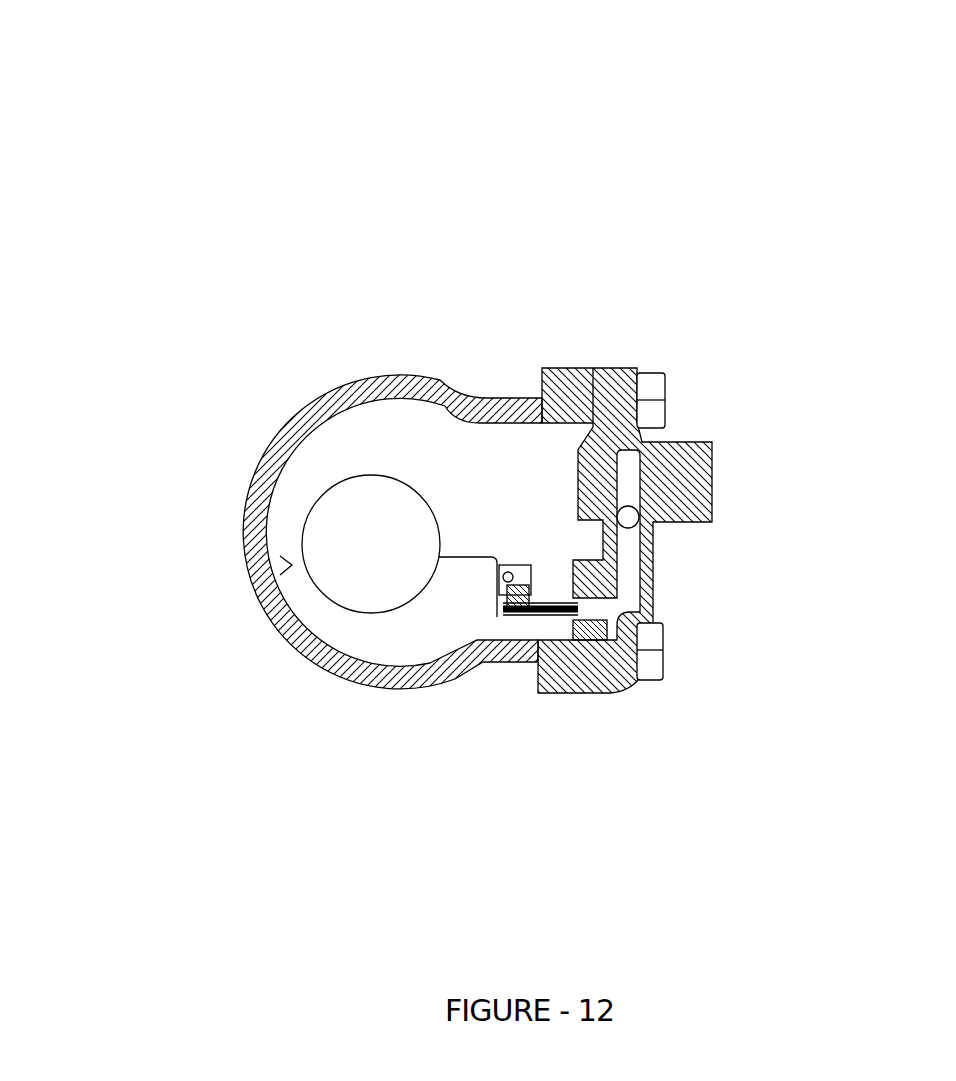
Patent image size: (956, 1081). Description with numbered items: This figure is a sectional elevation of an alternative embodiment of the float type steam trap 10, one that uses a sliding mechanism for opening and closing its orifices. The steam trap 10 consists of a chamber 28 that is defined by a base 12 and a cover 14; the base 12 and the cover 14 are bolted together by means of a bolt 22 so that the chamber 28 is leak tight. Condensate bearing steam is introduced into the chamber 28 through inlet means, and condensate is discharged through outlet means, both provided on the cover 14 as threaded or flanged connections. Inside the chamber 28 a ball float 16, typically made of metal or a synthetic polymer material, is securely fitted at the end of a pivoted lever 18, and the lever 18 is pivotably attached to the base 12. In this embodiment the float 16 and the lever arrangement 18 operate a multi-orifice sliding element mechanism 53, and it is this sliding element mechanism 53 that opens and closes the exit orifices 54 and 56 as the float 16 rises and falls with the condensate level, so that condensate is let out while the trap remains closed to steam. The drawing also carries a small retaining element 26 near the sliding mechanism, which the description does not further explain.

The steam trap 10 is at (540, 125).
The base 12 is at (618, 365).
The cover 14 is at (437, 376).
The ball float 16 is at (327, 487).
The pivoted lever 18 is at (467, 555).
The bolt 22 is at (668, 377).
The retainer 26 is at (497, 590).
The chamber 28 is at (285, 565).
The sliding element mechanism 53 is at (575, 620).
The exit orifice 54 is at (538, 622).
The exit orifice 56 is at (565, 607).